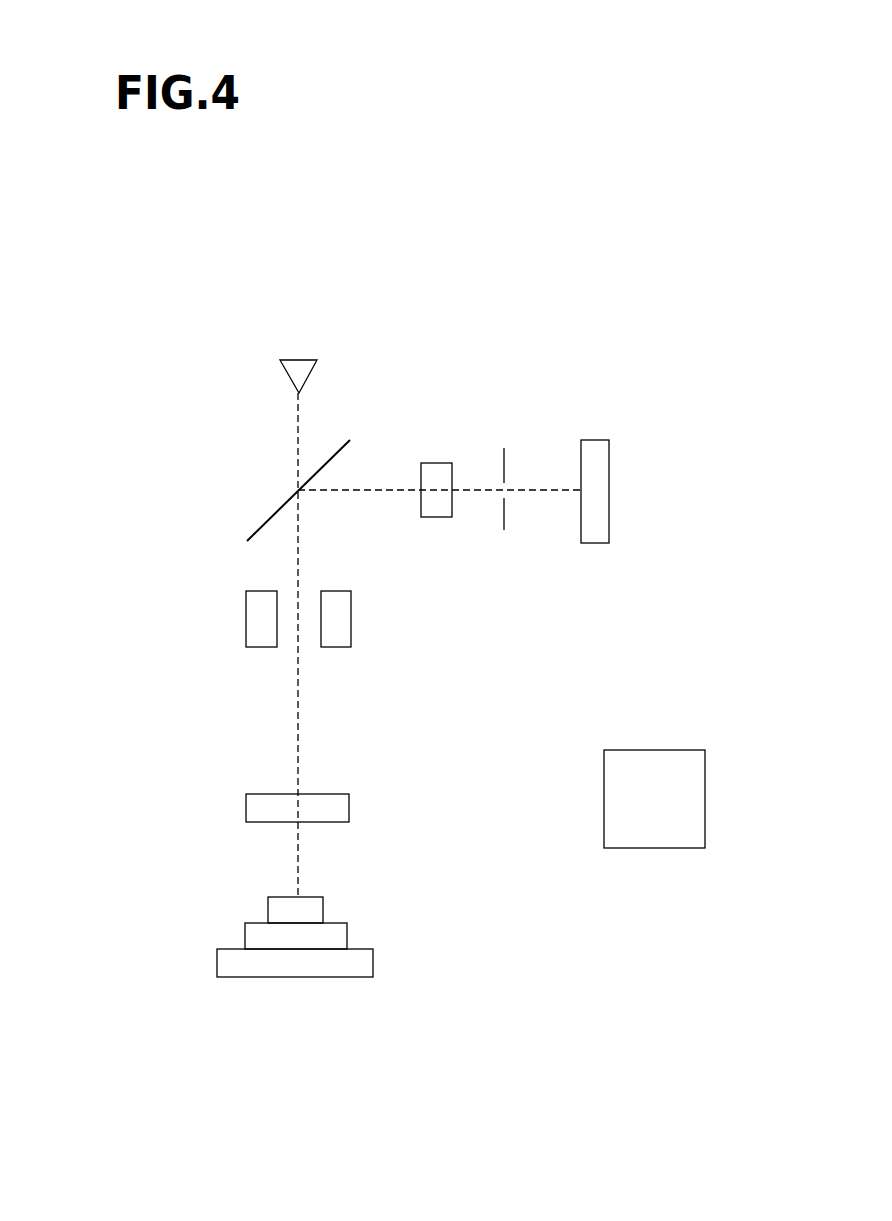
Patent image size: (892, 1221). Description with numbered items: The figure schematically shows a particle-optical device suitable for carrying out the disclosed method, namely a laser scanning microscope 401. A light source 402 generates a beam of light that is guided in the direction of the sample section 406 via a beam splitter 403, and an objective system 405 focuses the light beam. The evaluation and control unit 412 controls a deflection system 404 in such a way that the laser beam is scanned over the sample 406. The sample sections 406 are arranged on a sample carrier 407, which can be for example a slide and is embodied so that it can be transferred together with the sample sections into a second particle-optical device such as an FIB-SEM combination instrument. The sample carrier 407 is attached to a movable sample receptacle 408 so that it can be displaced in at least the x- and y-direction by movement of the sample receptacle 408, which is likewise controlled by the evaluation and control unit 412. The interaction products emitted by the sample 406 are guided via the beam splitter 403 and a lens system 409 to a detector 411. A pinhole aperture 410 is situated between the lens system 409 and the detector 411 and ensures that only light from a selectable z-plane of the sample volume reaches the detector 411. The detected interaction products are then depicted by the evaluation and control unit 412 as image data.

The laser scanning microscope 401 is at (499, 248).
The light source 402 is at (324, 304).
The beam splitter 403 is at (336, 445).
The deflection system 404 is at (341, 619).
The objective system 405 is at (252, 809).
The sample section 406 is at (305, 909).
The sample carrier 407 is at (273, 936).
The sample receptacle 408 is at (360, 960).
The lens system 409 is at (436, 470).
The pinhole aperture 410 is at (504, 460).
The detector 411 is at (594, 450).
The evaluation and control unit 412 is at (676, 760).